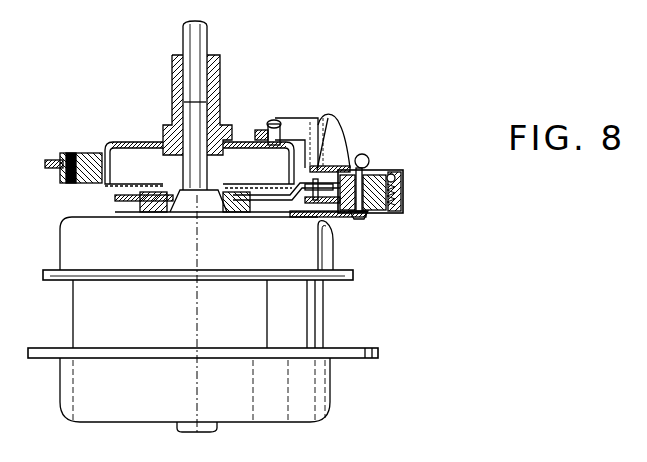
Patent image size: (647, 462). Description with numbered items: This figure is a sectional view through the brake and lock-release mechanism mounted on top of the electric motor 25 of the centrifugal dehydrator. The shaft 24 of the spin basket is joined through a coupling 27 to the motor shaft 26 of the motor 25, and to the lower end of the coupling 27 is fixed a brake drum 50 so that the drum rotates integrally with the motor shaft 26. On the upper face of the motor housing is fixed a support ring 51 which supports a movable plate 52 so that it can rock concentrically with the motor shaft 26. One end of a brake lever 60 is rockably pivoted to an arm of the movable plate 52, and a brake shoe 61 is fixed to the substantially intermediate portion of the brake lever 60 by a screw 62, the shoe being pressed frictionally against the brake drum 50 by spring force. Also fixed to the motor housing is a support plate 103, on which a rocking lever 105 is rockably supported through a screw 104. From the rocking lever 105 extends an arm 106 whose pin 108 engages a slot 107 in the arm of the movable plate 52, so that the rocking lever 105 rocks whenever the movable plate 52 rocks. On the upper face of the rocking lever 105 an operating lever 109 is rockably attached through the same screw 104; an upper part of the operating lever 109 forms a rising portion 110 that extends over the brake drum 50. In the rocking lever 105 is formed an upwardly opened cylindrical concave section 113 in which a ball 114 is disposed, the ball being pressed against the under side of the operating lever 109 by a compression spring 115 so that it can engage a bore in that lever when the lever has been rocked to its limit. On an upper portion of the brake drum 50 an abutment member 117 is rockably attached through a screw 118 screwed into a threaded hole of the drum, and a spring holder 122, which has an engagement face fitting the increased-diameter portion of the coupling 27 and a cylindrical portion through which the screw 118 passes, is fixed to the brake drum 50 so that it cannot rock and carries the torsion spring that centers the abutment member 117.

The shaft 24 is at (208, 27).
The electric motor 25 is at (72, 307).
The motor shaft 26 is at (196, 102).
The coupling 27 is at (221, 62).
The brake drum 50 is at (120, 146).
The support ring 51 is at (243, 213).
The movable plate 52 is at (114, 198).
The brake lever 60 is at (50, 169).
The brake shoe 61 is at (92, 153).
The screw 62 is at (70, 153).
The support plate 103 is at (353, 216).
The screw 104 is at (368, 162).
The rocking lever 105 is at (370, 214).
The arm 106 is at (316, 220).
The slot 107 is at (312, 206).
The pin 108 is at (341, 152).
The operating lever 109 is at (402, 175).
The rising portion 110 is at (323, 124).
The cylindrical concave section 113 is at (396, 209).
The ball 114 is at (396, 180).
The compression spring 115 is at (398, 195).
The abutment member 117 is at (282, 122).
The screw 118 is at (271, 120).
The spring holder 122 is at (238, 163).